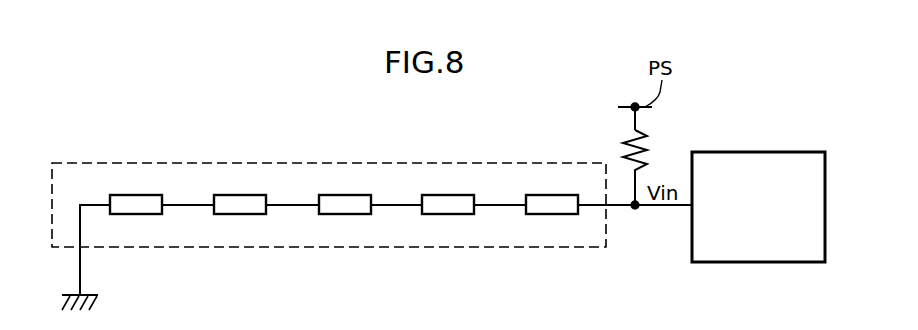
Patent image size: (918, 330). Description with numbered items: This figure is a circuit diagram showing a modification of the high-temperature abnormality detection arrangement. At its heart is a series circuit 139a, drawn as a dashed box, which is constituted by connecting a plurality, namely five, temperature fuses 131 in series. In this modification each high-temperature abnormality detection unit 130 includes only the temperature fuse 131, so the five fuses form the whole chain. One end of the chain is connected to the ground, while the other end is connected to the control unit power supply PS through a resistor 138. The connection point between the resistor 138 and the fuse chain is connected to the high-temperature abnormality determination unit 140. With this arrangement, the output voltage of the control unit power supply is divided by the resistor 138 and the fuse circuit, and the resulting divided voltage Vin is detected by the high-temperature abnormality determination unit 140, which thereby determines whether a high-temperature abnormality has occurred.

The high-temperature abnormality detection unit 130 is at (386, 245).
The temperature fuse 131 is at (135, 214).
The resistor 138 is at (645, 144).
The series circuit 139a is at (523, 163).
The high-temperature abnormality determination unit 140 is at (777, 152).